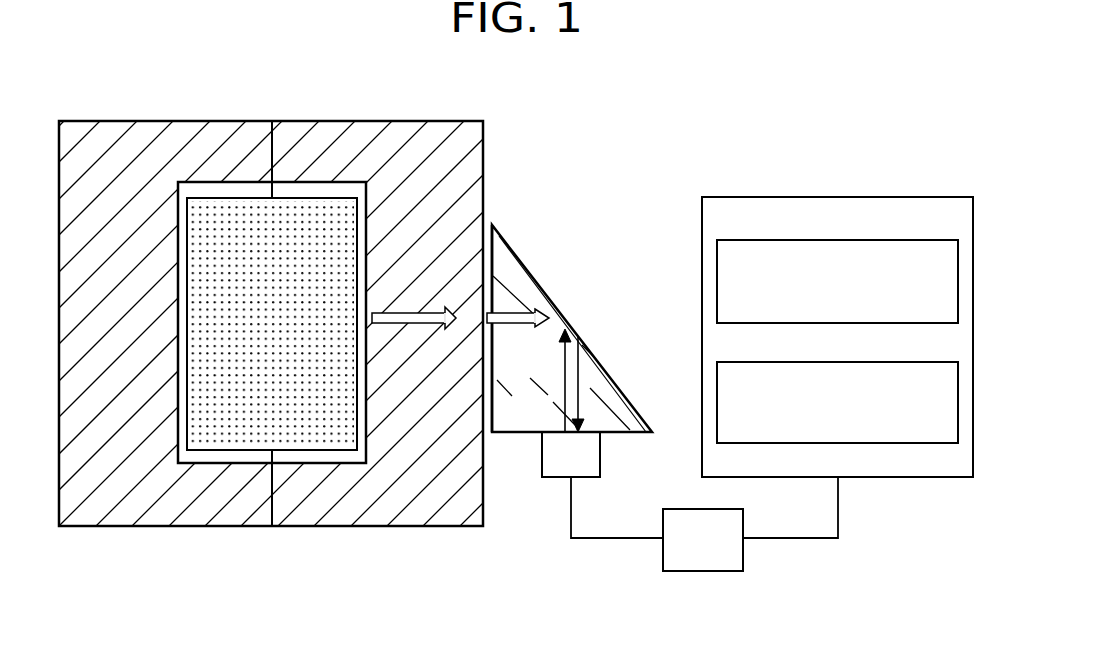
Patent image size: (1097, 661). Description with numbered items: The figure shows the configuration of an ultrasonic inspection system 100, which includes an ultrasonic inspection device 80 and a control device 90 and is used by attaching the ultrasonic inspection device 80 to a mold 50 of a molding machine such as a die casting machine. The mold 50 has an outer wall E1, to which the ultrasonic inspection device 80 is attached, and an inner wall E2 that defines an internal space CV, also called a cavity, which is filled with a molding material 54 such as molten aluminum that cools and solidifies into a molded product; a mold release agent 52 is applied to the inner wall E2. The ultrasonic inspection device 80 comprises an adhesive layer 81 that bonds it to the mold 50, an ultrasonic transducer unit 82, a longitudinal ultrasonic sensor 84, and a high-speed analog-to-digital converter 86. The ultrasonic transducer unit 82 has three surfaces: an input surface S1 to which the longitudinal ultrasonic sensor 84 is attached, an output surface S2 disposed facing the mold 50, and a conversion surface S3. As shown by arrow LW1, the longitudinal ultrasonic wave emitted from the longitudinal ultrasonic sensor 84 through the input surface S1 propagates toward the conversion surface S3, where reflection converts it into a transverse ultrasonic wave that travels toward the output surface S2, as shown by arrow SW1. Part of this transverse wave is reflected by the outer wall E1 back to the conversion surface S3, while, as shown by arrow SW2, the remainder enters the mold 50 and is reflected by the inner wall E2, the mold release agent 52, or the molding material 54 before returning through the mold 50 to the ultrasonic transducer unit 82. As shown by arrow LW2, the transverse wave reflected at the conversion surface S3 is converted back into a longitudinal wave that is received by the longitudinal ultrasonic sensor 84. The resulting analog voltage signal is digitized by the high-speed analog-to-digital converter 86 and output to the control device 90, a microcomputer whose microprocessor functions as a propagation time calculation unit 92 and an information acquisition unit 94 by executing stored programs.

The ultrasonic inspection system 100 is at (858, 132).
The mold 50 is at (243, 122).
The mold release agent 52 is at (342, 190).
The molding material 54 is at (340, 277).
The ultrasonic inspection device 80 is at (639, 193).
The adhesive layer 81 is at (491, 225).
The ultrasonic transducer unit 82 is at (533, 278).
The longitudinal ultrasonic sensor 84 is at (586, 478).
The high-speed analog-to-digital converter 86 is at (703, 572).
The control device 90 is at (782, 198).
The propagation time calculation unit 92 is at (897, 240).
The information acquisition unit 94 is at (895, 362).
The internal space CV is at (212, 433).
The outer wall E1 is at (492, 413).
The inner wall E2 is at (366, 425).
The input surface S1 is at (612, 434).
The output surface S2 is at (484, 476).
The conversion surface S3 is at (569, 325).
The arrow indicating transverse ultrasonic wave SW1 is at (527, 326).
The arrow indicating transverse ultrasonic wave in mold SW2 is at (440, 326).
The arrow indicating longitudinal ultrasonic wave LW1 is at (562, 382).
The arrow indicating returning longitudinal ultrasonic wave LW2 is at (580, 387).